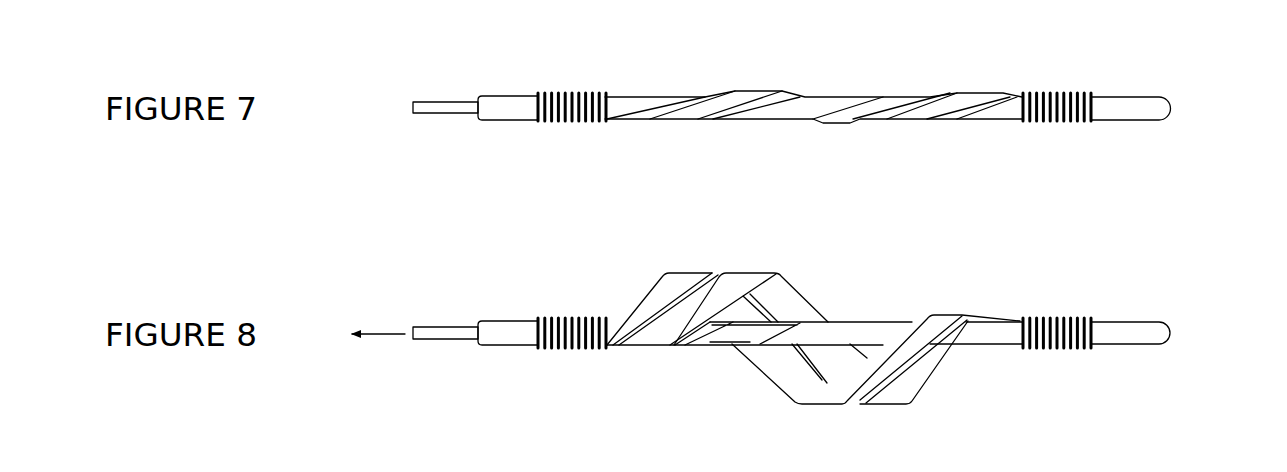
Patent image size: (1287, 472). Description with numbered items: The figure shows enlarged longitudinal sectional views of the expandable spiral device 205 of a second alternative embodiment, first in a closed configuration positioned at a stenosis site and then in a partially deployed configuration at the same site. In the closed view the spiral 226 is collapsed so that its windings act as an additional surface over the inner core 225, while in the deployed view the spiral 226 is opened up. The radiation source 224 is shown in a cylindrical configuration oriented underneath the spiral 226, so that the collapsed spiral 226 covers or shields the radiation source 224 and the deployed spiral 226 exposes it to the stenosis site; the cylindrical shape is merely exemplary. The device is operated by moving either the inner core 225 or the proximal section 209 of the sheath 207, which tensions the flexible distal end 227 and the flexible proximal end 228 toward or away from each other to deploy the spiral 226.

In FIG. 7, the expandable spiral device 205 is at (813, 103).
In FIG. 8, the expandable spiral device 205 is at (814, 320).
In FIG. 7, the sheath 207 is at (512, 103).
In FIG. 7, the proximal section 209 is at (508, 125).
In FIG. 8, the radiation source 224 is at (732, 337).
In FIG. 7, the inner core 225 is at (798, 112).
In FIG. 8, the inner core 225 is at (838, 330).
In FIG. 7, the spiral 226 is at (795, 97).
In FIG. 8, the spiral 226 is at (793, 300).
In FIG. 7, the flexible distal end 227 is at (1058, 93).
In FIG. 7, the flexible proximal end 228 is at (582, 95).